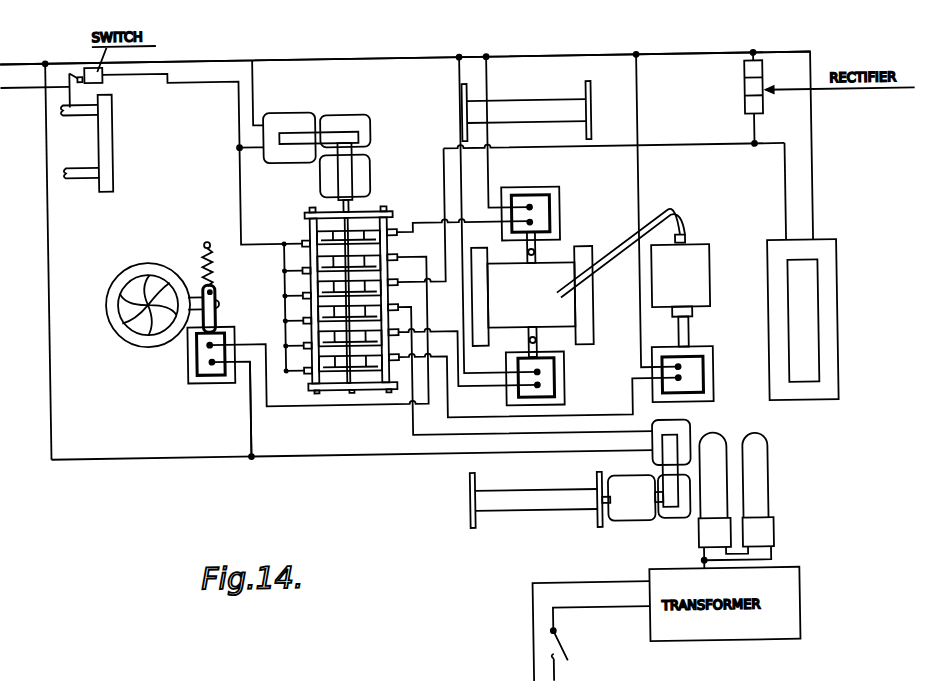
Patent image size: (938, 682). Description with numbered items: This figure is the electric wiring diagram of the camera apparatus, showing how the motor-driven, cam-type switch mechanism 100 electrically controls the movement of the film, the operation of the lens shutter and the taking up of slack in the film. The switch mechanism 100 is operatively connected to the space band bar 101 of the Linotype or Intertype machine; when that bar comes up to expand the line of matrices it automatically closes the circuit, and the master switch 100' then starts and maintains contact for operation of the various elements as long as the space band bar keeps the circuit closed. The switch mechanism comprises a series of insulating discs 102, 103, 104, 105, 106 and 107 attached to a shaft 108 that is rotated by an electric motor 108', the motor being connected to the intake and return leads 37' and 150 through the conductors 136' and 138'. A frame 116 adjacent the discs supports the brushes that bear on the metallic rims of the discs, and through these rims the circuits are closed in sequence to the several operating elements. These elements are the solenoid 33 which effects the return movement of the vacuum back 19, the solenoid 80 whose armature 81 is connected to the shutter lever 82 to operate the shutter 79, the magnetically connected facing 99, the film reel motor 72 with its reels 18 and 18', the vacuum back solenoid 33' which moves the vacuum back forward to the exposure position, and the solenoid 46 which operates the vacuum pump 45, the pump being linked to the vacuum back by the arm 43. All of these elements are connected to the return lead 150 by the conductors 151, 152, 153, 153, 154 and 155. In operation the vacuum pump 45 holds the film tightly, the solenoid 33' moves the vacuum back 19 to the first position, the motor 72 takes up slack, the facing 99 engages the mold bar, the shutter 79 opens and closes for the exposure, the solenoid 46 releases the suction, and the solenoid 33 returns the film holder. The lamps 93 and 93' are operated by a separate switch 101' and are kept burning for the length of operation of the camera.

The master switch 100' is at (65, 74).
The supply lead 37' is at (36, 104).
The space band bar 101 is at (110, 143).
The return lead 150 is at (222, 57).
The conductor 138' is at (277, 93).
The conductor 136' is at (299, 150).
The electric motor 108' is at (369, 132).
The shaft 108 is at (366, 177).
The motor-driven switch mechanism 100 is at (369, 281).
The disc 102 is at (322, 233).
The disc 103 is at (313, 255).
The disc 104 is at (320, 280).
The disc 105 is at (318, 304).
The disc 106 is at (320, 330).
The disc 107 is at (312, 360).
The frame 116 is at (369, 391).
The shutter lever 82 is at (203, 287).
The shutter 79 is at (130, 314).
The armature 81 is at (198, 316).
The solenoid 80 is at (196, 362).
The conductor 153 is at (190, 448).
The conductor 152 is at (250, 431).
The conductor 151 is at (491, 90).
The reel 18 is at (526, 106).
The conductor 155 is at (640, 126).
The conductor 154 is at (463, 288).
The solenoid 33 is at (531, 213).
The vacuum back 19 is at (532, 296).
The vacuum back solenoid 33' is at (551, 365).
The lever arm 43 is at (672, 208).
The vacuum pump 45 is at (681, 295).
The solenoid 46 is at (692, 384).
The magnetically connected facing 99 is at (772, 331).
The reel 18' is at (540, 505).
The film reel motor 72 is at (626, 518).
The lamp 93 is at (720, 475).
The lamp 93' is at (773, 479).
The separate switch 101' is at (586, 654).